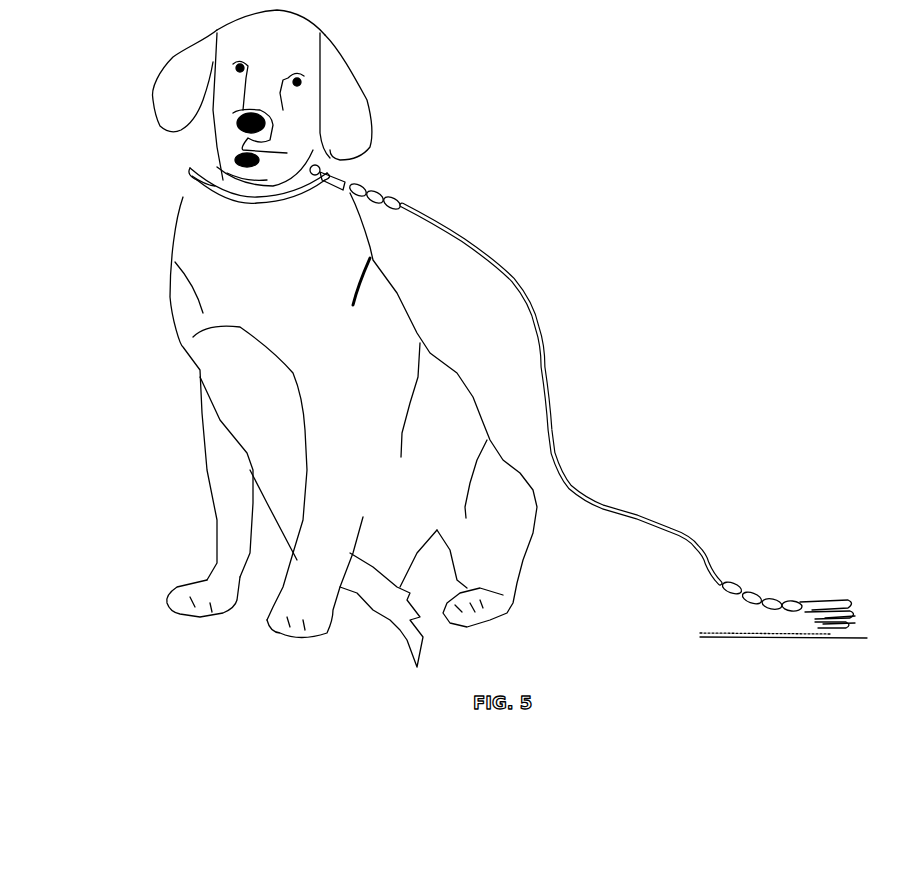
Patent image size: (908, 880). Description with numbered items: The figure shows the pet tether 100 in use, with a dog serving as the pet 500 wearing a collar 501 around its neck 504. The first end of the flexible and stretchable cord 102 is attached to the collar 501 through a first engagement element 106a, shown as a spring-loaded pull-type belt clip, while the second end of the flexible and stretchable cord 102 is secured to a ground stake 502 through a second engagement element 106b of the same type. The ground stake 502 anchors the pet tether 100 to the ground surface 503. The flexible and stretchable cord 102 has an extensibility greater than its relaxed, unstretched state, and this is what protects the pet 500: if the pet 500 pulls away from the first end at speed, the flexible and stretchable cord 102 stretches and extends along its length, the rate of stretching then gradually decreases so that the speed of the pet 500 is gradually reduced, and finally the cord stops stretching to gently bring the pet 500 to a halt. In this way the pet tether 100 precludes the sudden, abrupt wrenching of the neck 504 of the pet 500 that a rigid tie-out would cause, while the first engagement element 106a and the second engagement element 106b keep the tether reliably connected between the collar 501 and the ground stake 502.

The pet 500 is at (213, 288).
The neck 504 is at (205, 163).
The collar 501 is at (200, 185).
The first engagement element 106a is at (337, 172).
The flexible and stretchable cord 102 is at (540, 367).
The second engagement element 106b is at (797, 603).
The ground stake 502 is at (820, 622).
The ground surface 503 is at (828, 655).
The pet tether 100 is at (697, 484).